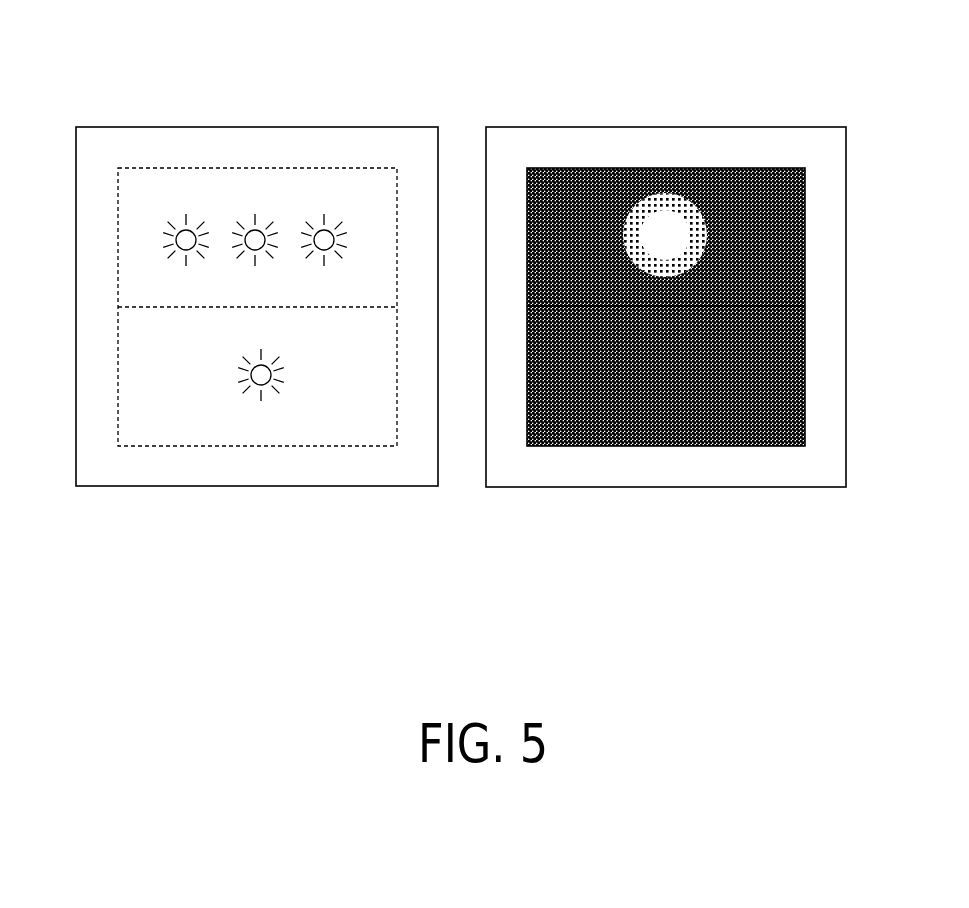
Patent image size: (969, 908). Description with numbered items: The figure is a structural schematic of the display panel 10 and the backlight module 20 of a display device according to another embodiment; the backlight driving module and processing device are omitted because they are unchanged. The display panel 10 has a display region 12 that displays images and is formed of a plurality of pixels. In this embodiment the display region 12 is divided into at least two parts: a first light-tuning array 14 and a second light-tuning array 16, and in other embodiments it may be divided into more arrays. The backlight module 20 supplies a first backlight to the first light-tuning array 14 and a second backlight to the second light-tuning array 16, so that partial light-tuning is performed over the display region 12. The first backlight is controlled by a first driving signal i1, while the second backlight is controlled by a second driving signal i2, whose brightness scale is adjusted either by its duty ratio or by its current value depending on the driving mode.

The display panel 10 is at (667, 127).
The display region 12 is at (740, 160).
The first light-tuning array 14 is at (790, 220).
The second light-tuning array 16 is at (790, 367).
The backlight module 20 is at (258, 127).
The first driving signal i1 is at (110, 248).
The second driving signal i2 is at (110, 372).